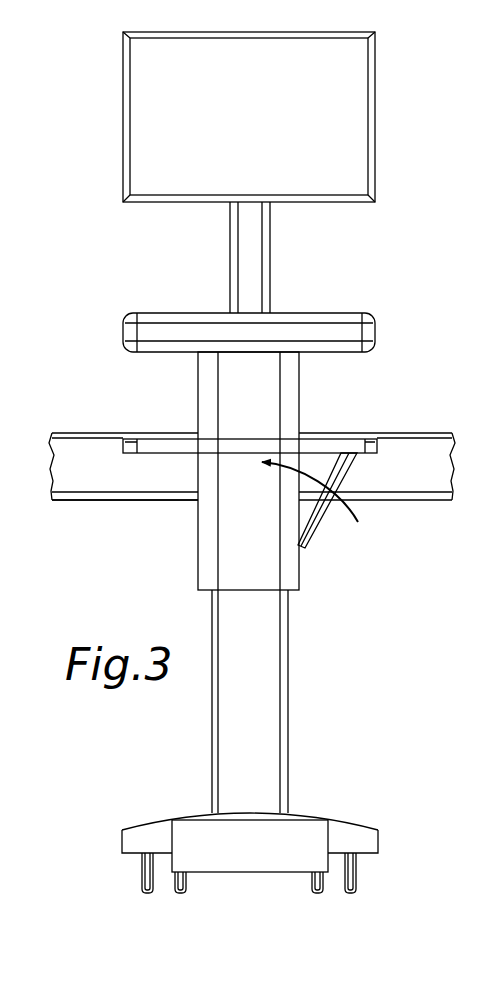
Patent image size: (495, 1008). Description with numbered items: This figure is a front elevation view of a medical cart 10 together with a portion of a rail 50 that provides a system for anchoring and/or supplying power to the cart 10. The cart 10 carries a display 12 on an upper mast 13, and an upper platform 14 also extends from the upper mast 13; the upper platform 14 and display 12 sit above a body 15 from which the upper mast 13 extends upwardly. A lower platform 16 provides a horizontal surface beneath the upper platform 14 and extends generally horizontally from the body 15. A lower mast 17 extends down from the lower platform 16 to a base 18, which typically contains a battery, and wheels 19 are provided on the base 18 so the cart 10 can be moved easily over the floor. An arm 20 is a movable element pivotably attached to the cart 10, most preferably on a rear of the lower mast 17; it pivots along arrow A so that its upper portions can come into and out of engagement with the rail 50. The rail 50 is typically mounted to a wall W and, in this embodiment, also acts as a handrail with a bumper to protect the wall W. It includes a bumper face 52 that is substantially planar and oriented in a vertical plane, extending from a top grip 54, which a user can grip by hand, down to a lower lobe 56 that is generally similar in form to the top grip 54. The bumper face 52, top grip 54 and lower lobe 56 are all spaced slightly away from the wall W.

The cart 10 is at (336, 700).
The display 12 is at (249, 117).
The upper mast 13 is at (241, 248).
The upper platform 14 is at (322, 313).
The body 15 is at (248, 471).
The lower platform 16 is at (174, 440).
The lower mast 17 is at (225, 736).
The base 18 is at (250, 842).
The wheels 19 is at (140, 867).
The arm 20 is at (316, 522).
The rail 50 is at (76, 410).
The bumper face 52 is at (123, 466).
The top grip 54 is at (412, 436).
The lower lobe 56 is at (110, 505).
The wall W is at (352, 389).
The arrow A is at (362, 508).